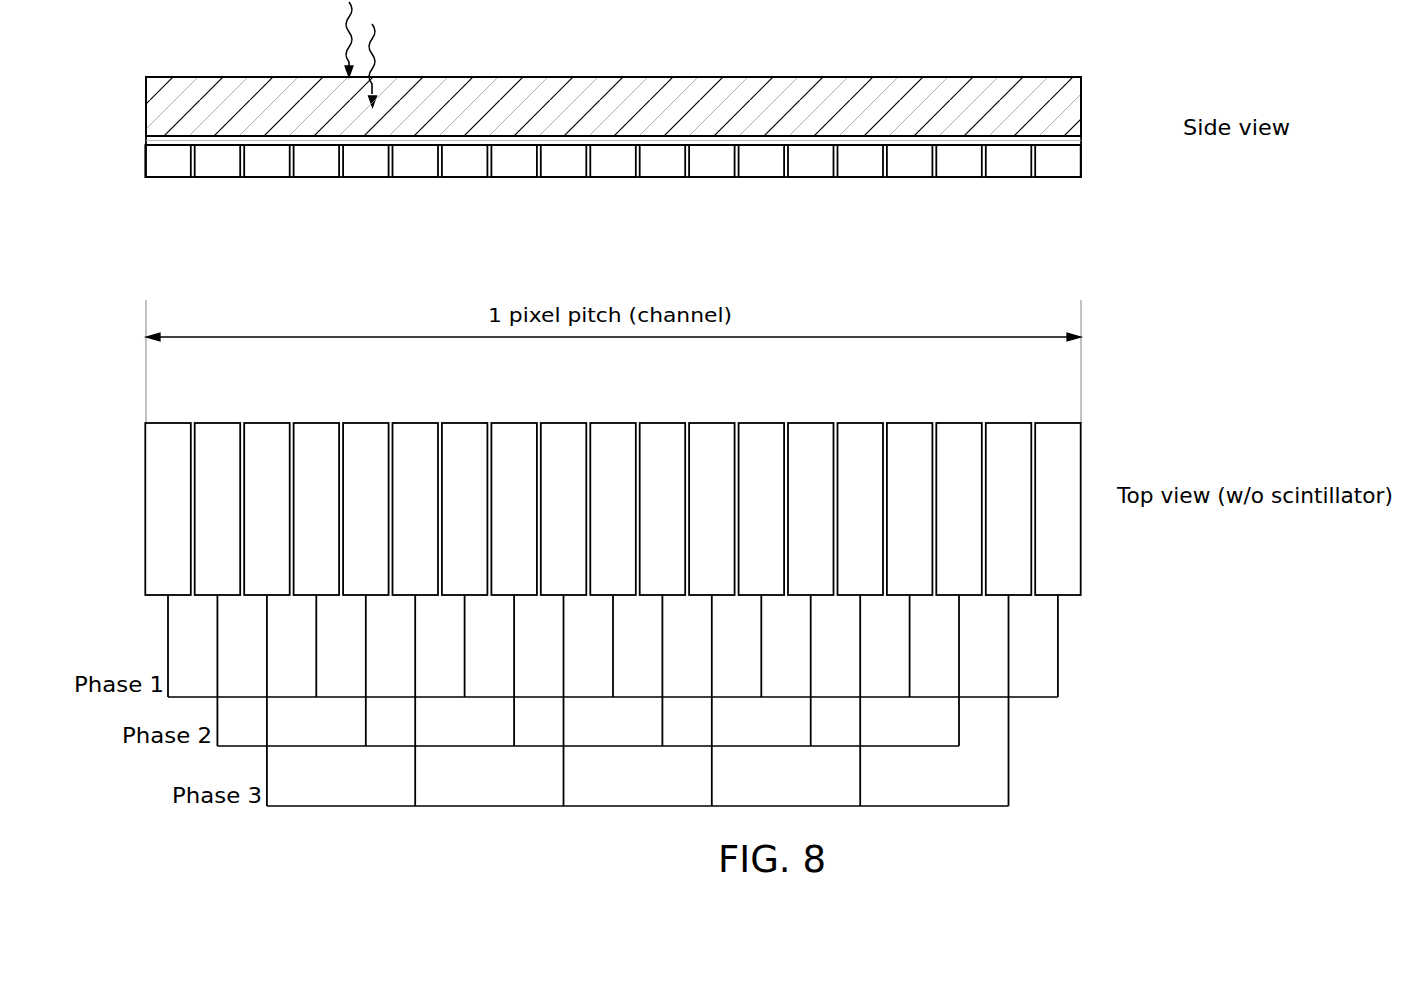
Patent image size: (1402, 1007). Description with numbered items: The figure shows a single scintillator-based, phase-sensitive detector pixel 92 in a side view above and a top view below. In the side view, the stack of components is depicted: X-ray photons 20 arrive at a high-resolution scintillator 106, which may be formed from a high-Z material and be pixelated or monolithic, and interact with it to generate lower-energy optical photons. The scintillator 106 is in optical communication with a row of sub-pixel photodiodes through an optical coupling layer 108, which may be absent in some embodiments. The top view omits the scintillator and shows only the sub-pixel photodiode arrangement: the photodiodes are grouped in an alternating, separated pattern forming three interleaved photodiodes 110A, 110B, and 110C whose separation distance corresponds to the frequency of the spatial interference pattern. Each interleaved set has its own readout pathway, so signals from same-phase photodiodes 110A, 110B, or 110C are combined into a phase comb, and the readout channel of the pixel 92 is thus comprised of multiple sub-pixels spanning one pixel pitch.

The X-ray photons 20 is at (336, 40).
The detector pixel 92 is at (1106, 74).
The scintillator 106 is at (1072, 113).
The optical coupling layer 108 is at (150, 140).
The first interleaved sub-pixel photodiode 110A is at (172, 172).
The second interleaved sub-pixel photodiode 110B is at (230, 172).
The third interleaved sub-pixel photodiode 110C is at (400, 172).